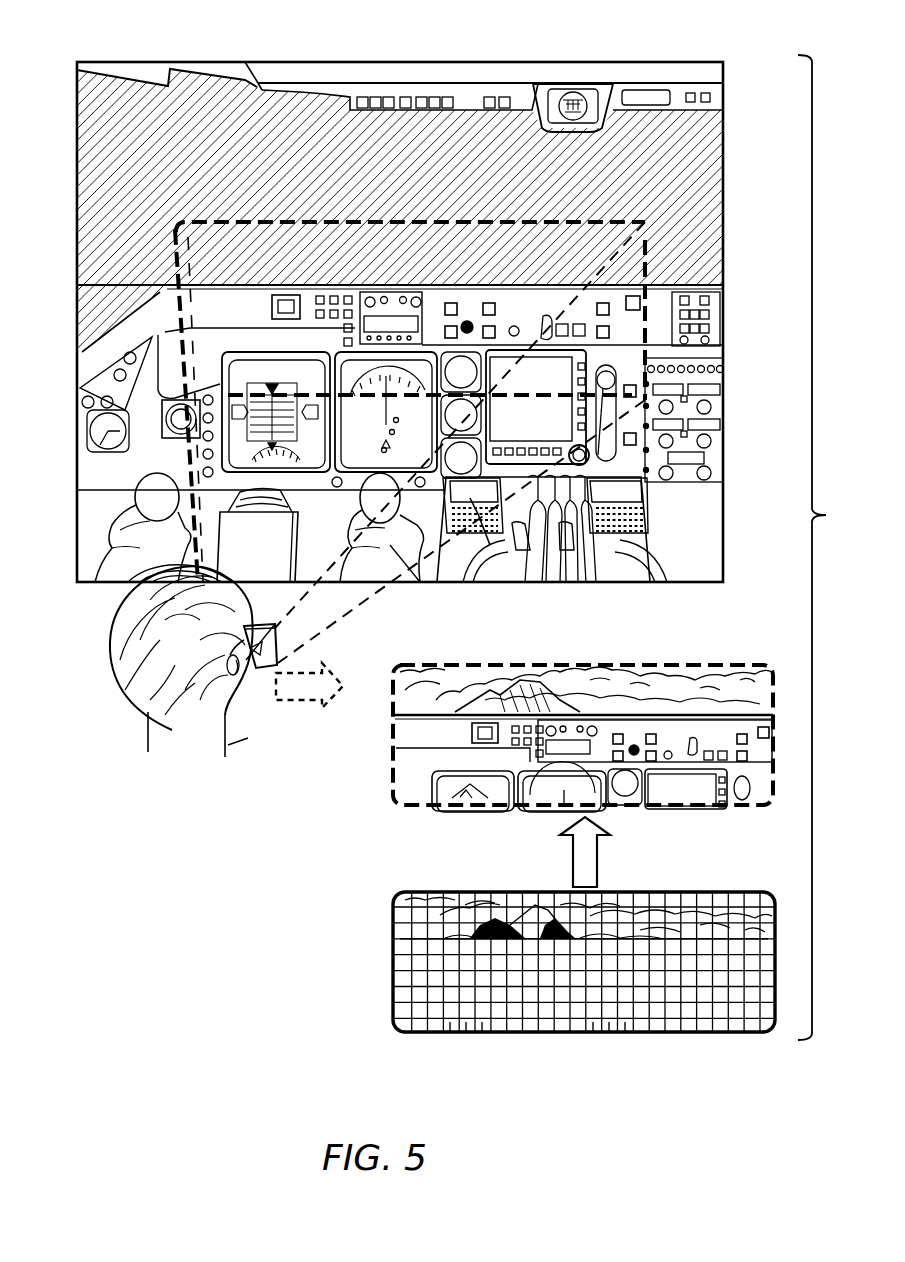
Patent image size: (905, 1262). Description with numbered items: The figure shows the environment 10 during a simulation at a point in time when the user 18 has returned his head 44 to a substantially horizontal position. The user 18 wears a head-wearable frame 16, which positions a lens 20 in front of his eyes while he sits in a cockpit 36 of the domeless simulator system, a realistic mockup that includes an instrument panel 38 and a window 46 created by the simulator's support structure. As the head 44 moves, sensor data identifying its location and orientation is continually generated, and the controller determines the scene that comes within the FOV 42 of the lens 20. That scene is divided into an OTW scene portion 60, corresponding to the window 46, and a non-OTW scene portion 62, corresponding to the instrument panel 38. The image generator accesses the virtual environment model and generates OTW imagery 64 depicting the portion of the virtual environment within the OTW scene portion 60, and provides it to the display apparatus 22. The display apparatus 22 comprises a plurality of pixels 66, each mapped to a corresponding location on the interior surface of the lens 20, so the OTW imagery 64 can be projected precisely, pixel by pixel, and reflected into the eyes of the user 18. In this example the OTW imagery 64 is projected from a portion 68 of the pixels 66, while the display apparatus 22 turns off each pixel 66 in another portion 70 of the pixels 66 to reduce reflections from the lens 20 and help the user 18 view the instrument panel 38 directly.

The environment 10 is at (588, 18).
The head-wearable frame 16 is at (278, 640).
The user 18 is at (150, 732).
The lens 20 is at (258, 672).
The display apparatus 22 is at (746, 874).
The cockpit 36 is at (150, 52).
The instrument panel 38 is at (735, 62).
The FOV 42 is at (218, 222).
The head 44 is at (112, 638).
The window 46 is at (735, 285).
The OTW scene portion 60 is at (172, 228).
The non-OTW scene portion 62 is at (172, 295).
The OTW imagery 64 is at (562, 668).
The pixels 66 is at (482, 1034).
The portion of the pixels 68 is at (390, 892).
The portion of the pixels 70 is at (390, 940).